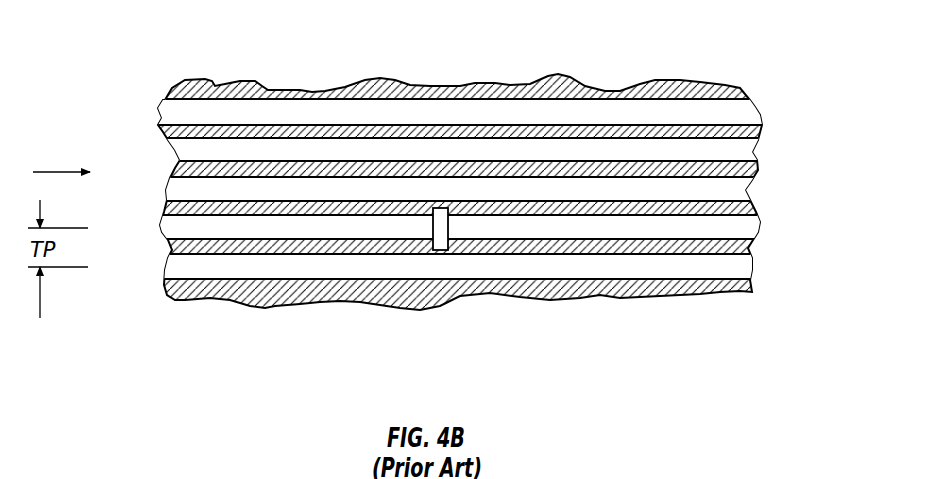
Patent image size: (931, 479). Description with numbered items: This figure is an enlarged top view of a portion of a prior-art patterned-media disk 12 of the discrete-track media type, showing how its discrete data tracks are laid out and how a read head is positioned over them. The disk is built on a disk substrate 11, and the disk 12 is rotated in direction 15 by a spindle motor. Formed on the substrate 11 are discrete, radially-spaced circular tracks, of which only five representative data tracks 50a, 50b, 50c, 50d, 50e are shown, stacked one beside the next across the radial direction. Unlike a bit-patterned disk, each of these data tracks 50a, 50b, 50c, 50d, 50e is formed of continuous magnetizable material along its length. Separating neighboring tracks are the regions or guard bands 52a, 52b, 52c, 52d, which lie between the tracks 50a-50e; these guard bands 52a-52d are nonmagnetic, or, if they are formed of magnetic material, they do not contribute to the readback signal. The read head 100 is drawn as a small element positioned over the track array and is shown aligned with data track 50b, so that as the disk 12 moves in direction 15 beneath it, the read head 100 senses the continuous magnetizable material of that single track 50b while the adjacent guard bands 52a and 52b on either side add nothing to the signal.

The magnetic recording disk 12 is at (250, 60).
The disk substrate 11 is at (270, 298).
The direction 15 is at (70, 166).
The read head 100 is at (440, 243).
The data track 50a is at (745, 272).
The data track 50b is at (748, 230).
The data track 50c is at (745, 192).
The data track 50d is at (748, 155).
The data track 50e is at (753, 117).
The guard band 52a is at (170, 250).
The guard band 52b is at (166, 204).
The guard band 52c is at (172, 160).
The guard band 52d is at (160, 116).